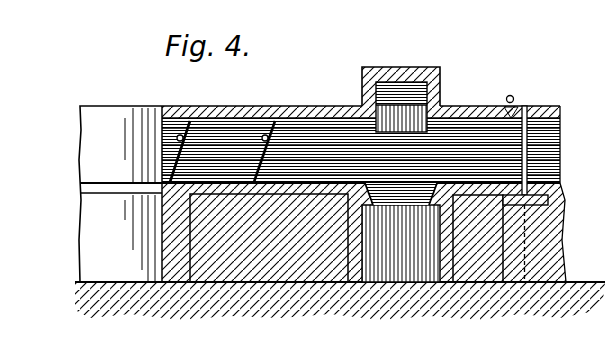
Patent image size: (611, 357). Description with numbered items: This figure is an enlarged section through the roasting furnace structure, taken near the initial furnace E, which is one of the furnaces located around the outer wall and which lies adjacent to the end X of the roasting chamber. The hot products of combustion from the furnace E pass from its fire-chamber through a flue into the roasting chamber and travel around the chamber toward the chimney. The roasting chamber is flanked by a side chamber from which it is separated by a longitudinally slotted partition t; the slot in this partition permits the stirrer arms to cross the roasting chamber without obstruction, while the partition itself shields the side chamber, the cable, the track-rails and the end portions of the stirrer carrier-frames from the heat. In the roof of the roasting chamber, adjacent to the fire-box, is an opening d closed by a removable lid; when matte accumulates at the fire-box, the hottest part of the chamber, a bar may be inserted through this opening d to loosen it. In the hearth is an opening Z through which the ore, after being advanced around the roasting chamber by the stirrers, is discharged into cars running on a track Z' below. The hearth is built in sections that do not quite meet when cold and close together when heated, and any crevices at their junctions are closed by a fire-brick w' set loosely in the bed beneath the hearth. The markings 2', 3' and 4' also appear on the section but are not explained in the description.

The initial furnace E is at (403, 76).
The longitudinally slotted partition t is at (471, 178).
The roof opening d is at (528, 105).
The fire-brick w' is at (545, 205).
The plate 2' is at (122, 194).
The pins 3' is at (232, 151).
The layer 4' is at (322, 174).
The end of roasting chamber X is at (269, 238).
The discharge opening Z is at (401, 232).
The car track Z' is at (400, 259).